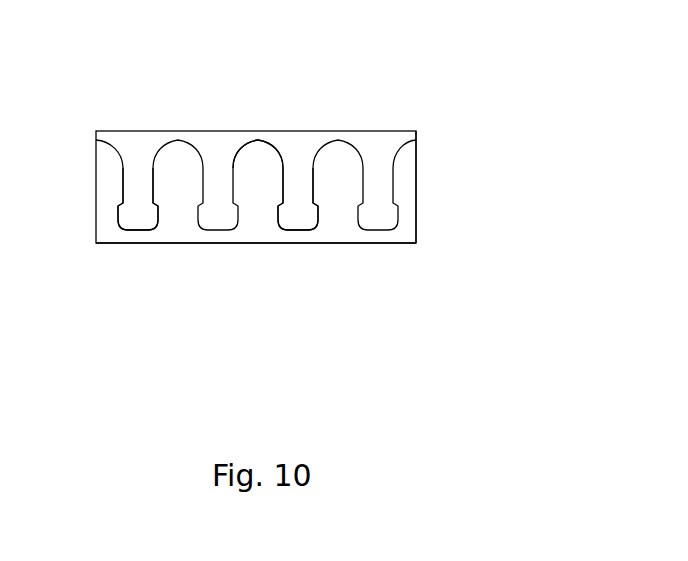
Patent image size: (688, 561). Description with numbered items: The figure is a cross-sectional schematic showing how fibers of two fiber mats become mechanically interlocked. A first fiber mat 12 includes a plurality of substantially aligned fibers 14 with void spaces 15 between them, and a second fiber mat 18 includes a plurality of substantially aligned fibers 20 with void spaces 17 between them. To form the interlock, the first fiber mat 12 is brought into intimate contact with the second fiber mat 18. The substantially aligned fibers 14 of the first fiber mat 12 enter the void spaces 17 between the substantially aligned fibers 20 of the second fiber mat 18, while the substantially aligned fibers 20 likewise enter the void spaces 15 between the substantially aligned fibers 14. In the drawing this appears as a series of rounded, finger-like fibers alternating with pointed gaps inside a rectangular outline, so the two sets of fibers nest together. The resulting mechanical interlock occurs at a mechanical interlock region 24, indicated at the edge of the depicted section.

The first fiber mat 12 is at (173, 131).
The substantially aligned fibers 14 is at (140, 177).
The void spaces 15 is at (175, 180).
The void spaces 17 is at (298, 203).
The second fiber mat 18 is at (178, 243).
The substantially aligned fibers 20 is at (258, 193).
The mechanical interlock region 24 is at (418, 183).